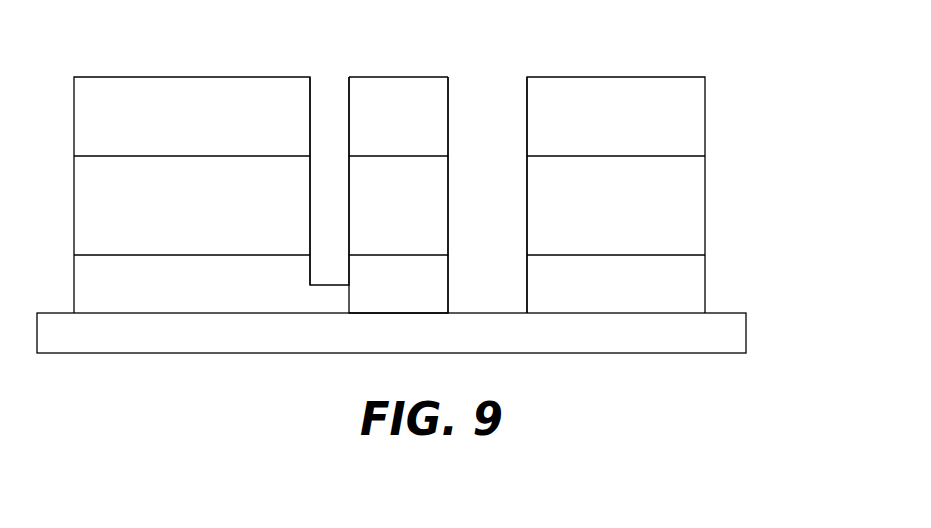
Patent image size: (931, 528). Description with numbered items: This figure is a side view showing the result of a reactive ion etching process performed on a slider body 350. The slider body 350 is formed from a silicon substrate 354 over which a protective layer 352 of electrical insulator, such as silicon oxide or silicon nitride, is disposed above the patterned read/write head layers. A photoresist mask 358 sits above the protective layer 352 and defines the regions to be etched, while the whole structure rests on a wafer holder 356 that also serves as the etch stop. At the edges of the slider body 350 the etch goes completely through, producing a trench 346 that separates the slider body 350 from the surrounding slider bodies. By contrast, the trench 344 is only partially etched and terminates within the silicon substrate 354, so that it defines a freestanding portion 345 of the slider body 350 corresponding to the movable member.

The trench 344 is at (333, 128).
The freestanding portion 345 is at (398, 77).
The trench 346 is at (490, 128).
The slider body 350 is at (450, 179).
The protective layer 352 is at (410, 220).
The silicon substrate 354 is at (410, 298).
The wafer holder 356 is at (410, 347).
The photoresist mask 358 is at (410, 130).